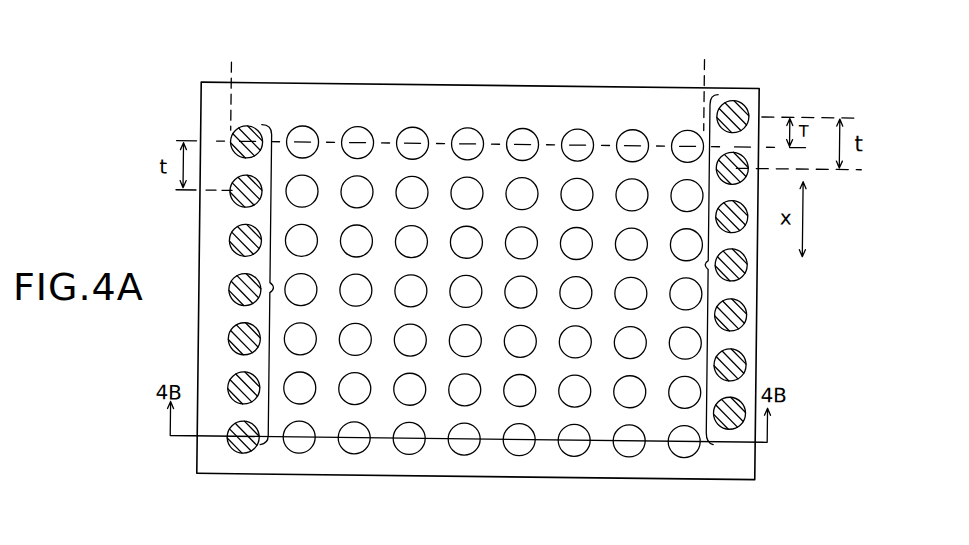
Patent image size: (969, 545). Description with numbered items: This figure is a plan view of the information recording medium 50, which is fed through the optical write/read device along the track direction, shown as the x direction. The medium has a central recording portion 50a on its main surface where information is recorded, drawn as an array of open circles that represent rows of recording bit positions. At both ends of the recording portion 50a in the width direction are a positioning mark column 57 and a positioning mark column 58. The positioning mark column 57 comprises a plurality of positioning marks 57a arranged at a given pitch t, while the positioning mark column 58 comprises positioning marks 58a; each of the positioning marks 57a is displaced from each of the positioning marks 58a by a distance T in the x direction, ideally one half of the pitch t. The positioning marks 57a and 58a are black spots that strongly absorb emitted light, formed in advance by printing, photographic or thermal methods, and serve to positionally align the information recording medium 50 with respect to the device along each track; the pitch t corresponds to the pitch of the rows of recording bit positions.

The information recording medium 50 is at (757, 125).
The recording portion 50a is at (232, 66).
The positioning mark column 57 is at (279, 298).
The positioning marks 57a is at (236, 133).
The positioning mark column 58 is at (699, 265).
The positioning marks 58a is at (737, 97).